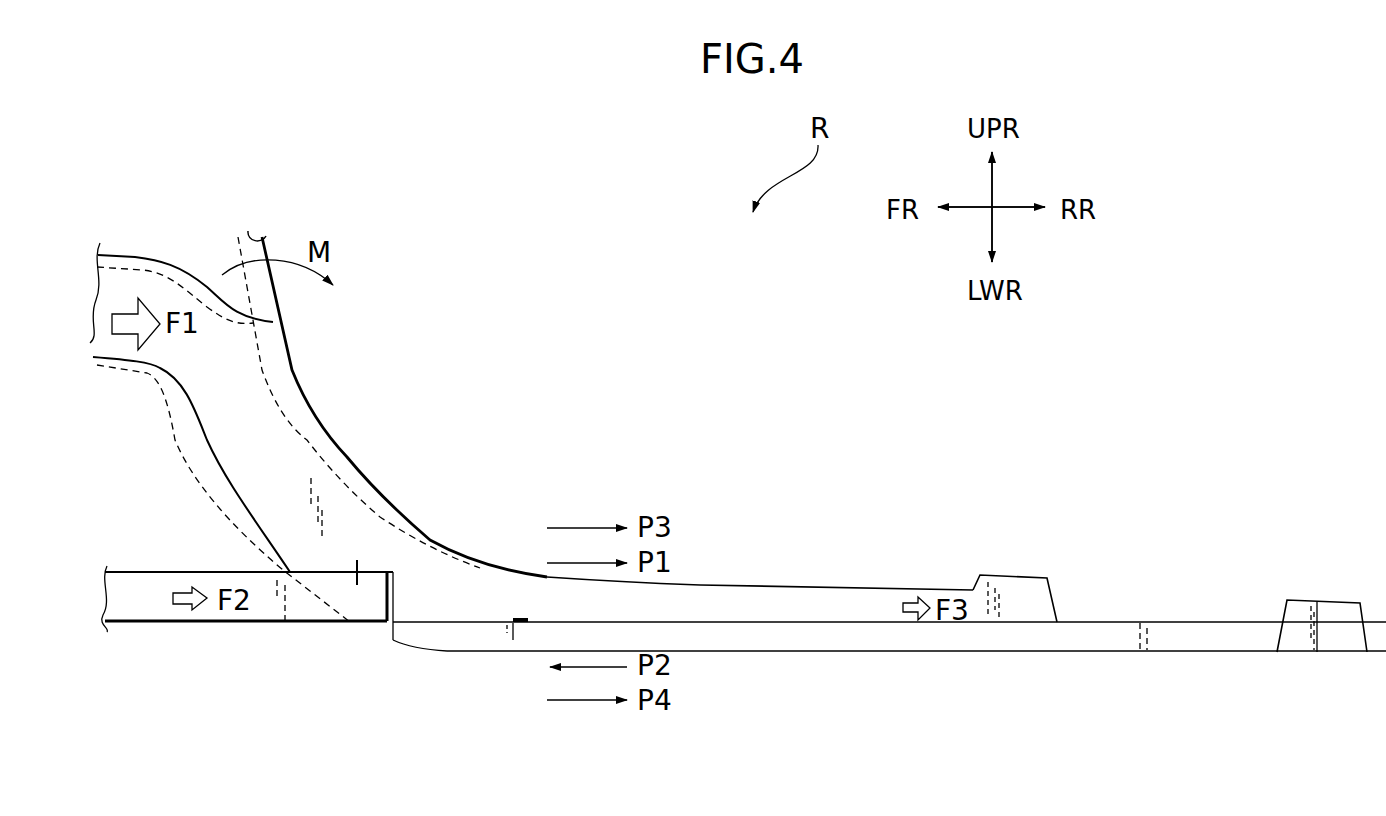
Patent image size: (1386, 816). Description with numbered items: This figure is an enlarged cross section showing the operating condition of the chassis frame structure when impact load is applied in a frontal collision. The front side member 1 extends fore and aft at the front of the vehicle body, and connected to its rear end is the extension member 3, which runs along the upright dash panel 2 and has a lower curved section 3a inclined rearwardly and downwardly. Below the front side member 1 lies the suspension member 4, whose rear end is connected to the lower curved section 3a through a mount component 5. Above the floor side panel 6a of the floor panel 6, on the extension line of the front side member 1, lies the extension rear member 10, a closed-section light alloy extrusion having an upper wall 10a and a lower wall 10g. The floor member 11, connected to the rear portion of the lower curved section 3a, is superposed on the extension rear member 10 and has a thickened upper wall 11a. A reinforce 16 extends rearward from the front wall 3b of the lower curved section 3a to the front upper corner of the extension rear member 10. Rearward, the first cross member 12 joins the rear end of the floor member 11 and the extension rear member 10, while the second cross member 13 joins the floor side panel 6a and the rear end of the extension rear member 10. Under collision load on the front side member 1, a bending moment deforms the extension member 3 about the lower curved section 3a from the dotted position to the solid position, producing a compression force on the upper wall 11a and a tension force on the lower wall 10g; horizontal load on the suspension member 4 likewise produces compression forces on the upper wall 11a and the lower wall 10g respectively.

The front side member 1 is at (120, 254).
The dash panel 2 is at (272, 245).
The extension member 3 is at (245, 428).
The lower curved section 3a is at (432, 587).
The front wall 3b is at (386, 600).
The suspension member 4 is at (145, 597).
The mount component 5 is at (353, 577).
The floor panel 6 is at (1227, 574).
The floor side panel 6a is at (1170, 652).
The extension rear member 10 is at (1108, 633).
The upper wall 10a is at (1070, 622).
The lower wall 10g is at (897, 650).
The floor member 11 is at (703, 593).
The upper wall 11a is at (793, 587).
The first cross member 12 is at (1013, 575).
The second cross member 13 is at (1322, 600).
The reinforce 16 is at (465, 620).